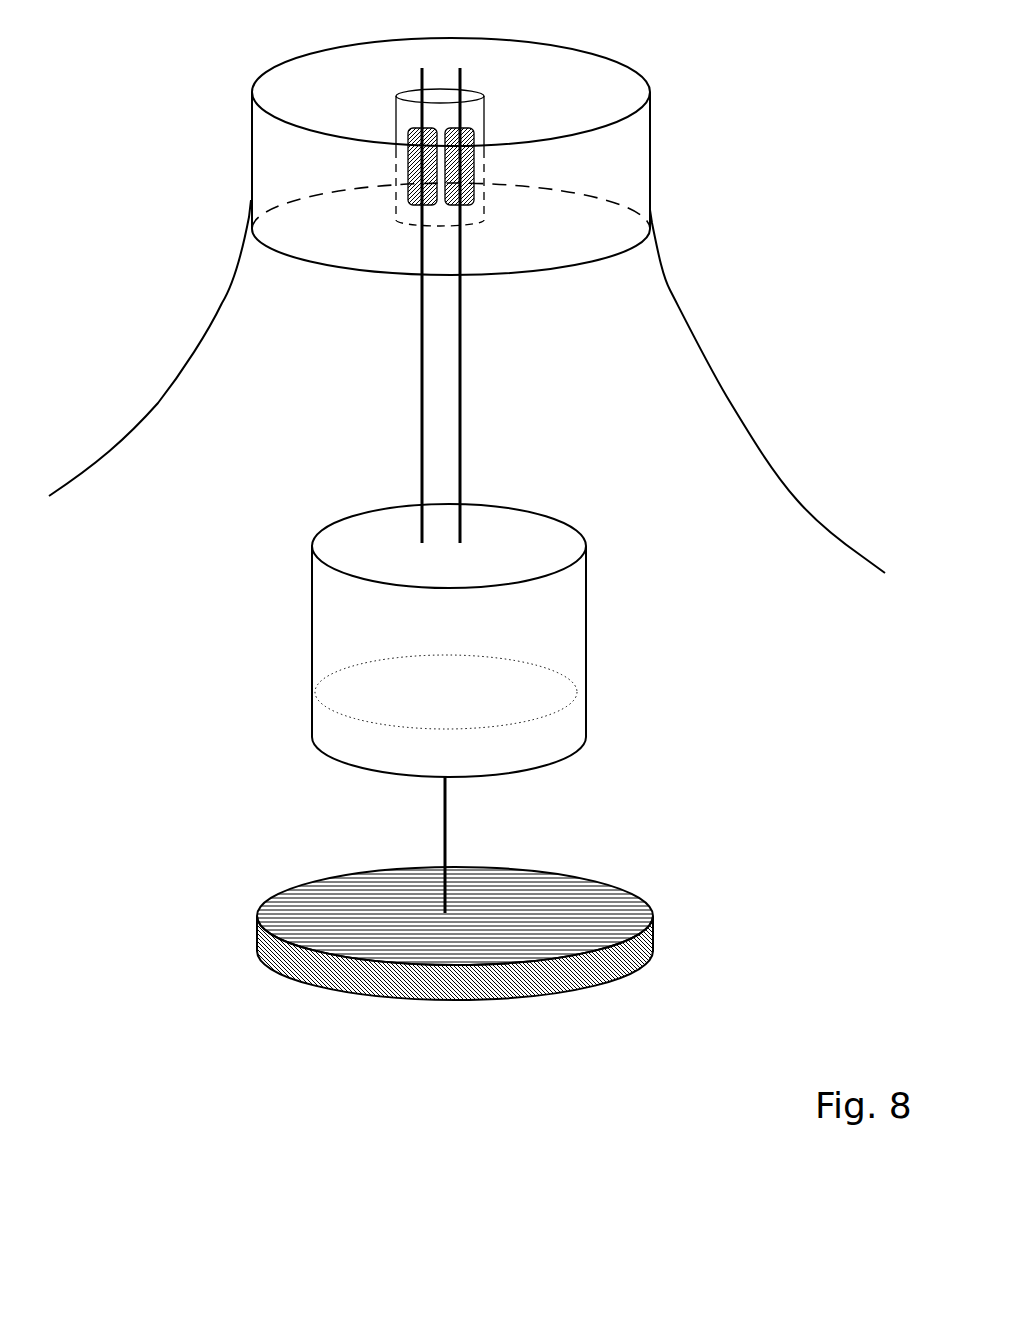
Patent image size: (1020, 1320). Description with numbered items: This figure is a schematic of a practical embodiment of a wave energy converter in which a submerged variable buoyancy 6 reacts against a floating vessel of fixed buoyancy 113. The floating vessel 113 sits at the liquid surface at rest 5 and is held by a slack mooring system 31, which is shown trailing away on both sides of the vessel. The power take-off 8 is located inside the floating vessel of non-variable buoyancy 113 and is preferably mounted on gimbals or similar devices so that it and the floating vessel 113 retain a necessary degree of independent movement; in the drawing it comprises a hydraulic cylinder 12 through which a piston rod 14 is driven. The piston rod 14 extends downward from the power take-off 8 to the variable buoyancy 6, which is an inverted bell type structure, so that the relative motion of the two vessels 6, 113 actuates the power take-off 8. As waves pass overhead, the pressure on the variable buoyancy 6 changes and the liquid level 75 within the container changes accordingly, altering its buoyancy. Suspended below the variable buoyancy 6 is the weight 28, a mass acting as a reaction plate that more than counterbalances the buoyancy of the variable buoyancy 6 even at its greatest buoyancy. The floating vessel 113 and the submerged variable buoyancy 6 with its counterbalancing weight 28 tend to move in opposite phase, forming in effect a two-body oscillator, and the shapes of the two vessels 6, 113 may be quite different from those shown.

The floating vessel of fixed buoyancy 113 is at (251, 92).
The liquid surface at rest 5 is at (143, 187).
The slack mooring system 31 is at (807, 503).
The power take-off 8 is at (368, 110).
The piston rod 14 is at (462, 113).
The hydraulic cylinder 12 is at (475, 163).
The variable buoyancy 6 is at (586, 627).
The liquid level 75 is at (586, 698).
The weight 28 is at (655, 927).